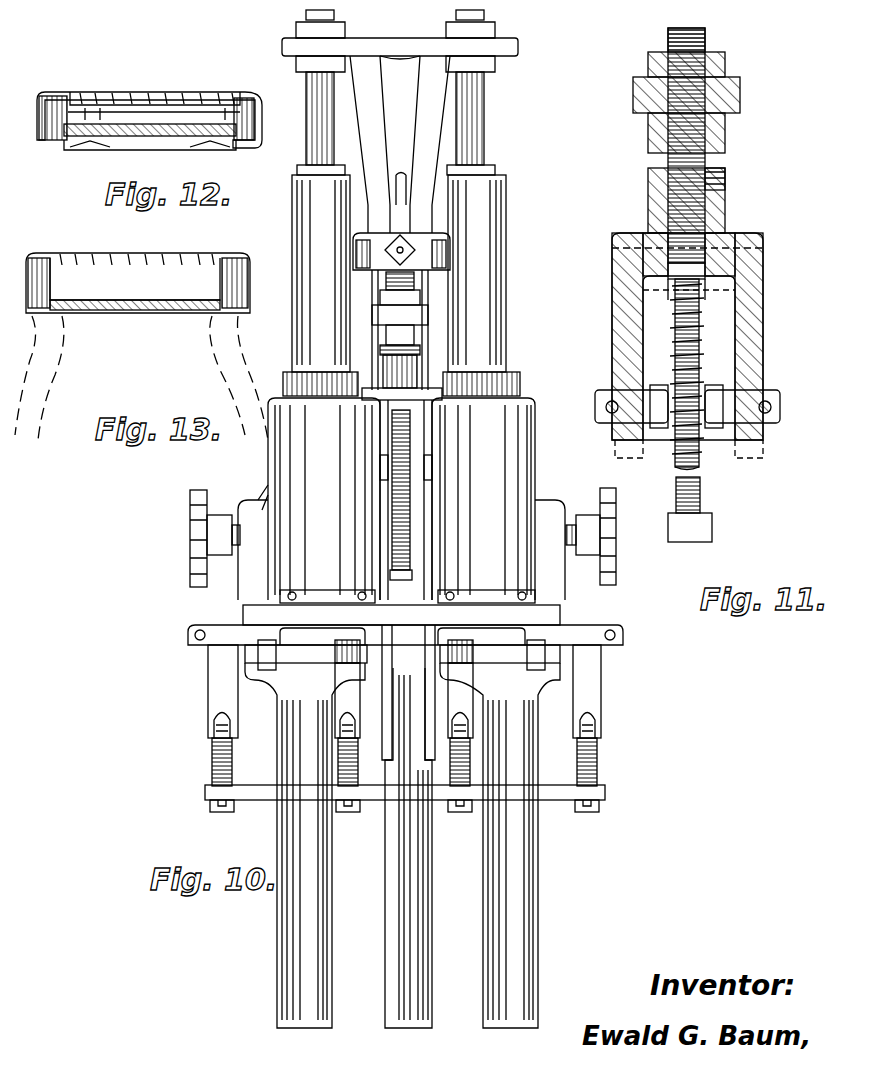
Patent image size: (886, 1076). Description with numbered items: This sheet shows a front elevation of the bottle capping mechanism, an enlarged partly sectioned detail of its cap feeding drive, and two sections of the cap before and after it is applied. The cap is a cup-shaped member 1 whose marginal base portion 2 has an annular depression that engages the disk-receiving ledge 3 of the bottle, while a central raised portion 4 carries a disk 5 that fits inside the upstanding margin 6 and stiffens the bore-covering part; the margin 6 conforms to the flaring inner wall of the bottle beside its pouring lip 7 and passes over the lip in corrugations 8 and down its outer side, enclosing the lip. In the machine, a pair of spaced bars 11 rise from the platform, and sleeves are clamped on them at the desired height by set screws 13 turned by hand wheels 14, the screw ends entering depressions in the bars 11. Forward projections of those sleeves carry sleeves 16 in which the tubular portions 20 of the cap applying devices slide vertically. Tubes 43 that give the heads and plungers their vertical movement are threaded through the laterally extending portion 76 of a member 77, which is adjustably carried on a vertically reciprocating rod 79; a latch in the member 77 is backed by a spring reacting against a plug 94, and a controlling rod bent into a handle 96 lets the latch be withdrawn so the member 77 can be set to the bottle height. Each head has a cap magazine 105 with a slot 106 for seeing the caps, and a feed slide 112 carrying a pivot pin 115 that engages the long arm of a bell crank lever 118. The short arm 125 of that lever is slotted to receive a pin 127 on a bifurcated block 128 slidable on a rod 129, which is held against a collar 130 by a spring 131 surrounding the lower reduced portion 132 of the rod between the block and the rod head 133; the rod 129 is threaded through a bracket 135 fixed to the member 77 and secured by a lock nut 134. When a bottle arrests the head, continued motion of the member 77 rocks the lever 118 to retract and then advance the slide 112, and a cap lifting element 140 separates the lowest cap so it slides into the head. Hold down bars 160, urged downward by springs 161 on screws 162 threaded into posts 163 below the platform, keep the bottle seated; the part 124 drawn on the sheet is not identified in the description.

In FIG. 12, the cup-shaped member 1 is at (240, 148).
In FIG. 12, the marginal base portion 2 is at (70, 140).
In FIG. 13, the disk-receiving ledge 3 is at (60, 316).
In FIG. 12, the central raised portion 4 is at (130, 140).
In FIG. 12, the disk 5 is at (140, 110).
In FIG. 12, the upstanding margin 6 is at (60, 130).
In FIG. 13, the pouring lip 7 is at (248, 260).
In FIG. 12, the corrugations 8 is at (92, 92).
In FIG. 10, the spaced bars 11 is at (332, 885).
In FIG. 10, the set screws 13 is at (210, 548).
In FIG. 10, the hand wheels 14 is at (190, 530).
In FIG. 10, the sleeves 16 is at (283, 383).
In FIG. 10, the portions of the cap applying devices 20 is at (310, 305).
In FIG. 10, the tubes 43 is at (306, 110).
In FIG. 10, the laterally extending portion 76 is at (452, 48).
In FIG. 10, the member 77 is at (378, 47).
In FIG. 10, the vertically reciprocating rod 79 is at (410, 930).
In FIG. 10, the plug 94 is at (414, 248).
In FIG. 10, the handle 96 is at (403, 165).
In FIG. 10, the cap magazine 105 is at (268, 488).
In FIG. 10, the slot 106 is at (310, 458).
In FIG. 10, the feed slide 112 is at (245, 612).
In FIG. 10, the pivot pin 115 is at (315, 655).
In FIG. 10, the bell crank lever 118 is at (420, 725).
In FIG. 10, the lower plate 124 is at (560, 645).
In FIG. 11, the short arm 125 is at (705, 370).
In FIG. 11, the pin 127 is at (602, 390).
In FIG. 10, the bifurcated block 128 is at (432, 400).
In FIG. 11, the bifurcated block 128 is at (763, 280).
In FIG. 10, the rod 129 is at (412, 520).
In FIG. 11, the rod 129 is at (705, 165).
In FIG. 11, the collar 130 is at (648, 175).
In FIG. 10, the spring 131 is at (424, 470).
In FIG. 11, the spring 131 is at (670, 300).
In FIG. 11, the lower reduced portion 132 is at (695, 470).
In FIG. 11, the head 133 is at (712, 527).
In FIG. 10, the lock nut 134 is at (415, 300).
In FIG. 11, the lock nut 134 is at (725, 52).
In FIG. 10, the bracket 135 is at (420, 320).
In FIG. 11, the bracket 135 is at (740, 95).
In FIG. 10, the cap lifting element 140 is at (335, 575).
In FIG. 10, the hold down bars 160 is at (570, 800).
In FIG. 10, the springs 161 is at (212, 762).
In FIG. 10, the screws 162 is at (210, 806).
In FIG. 10, the posts 163 is at (208, 705).